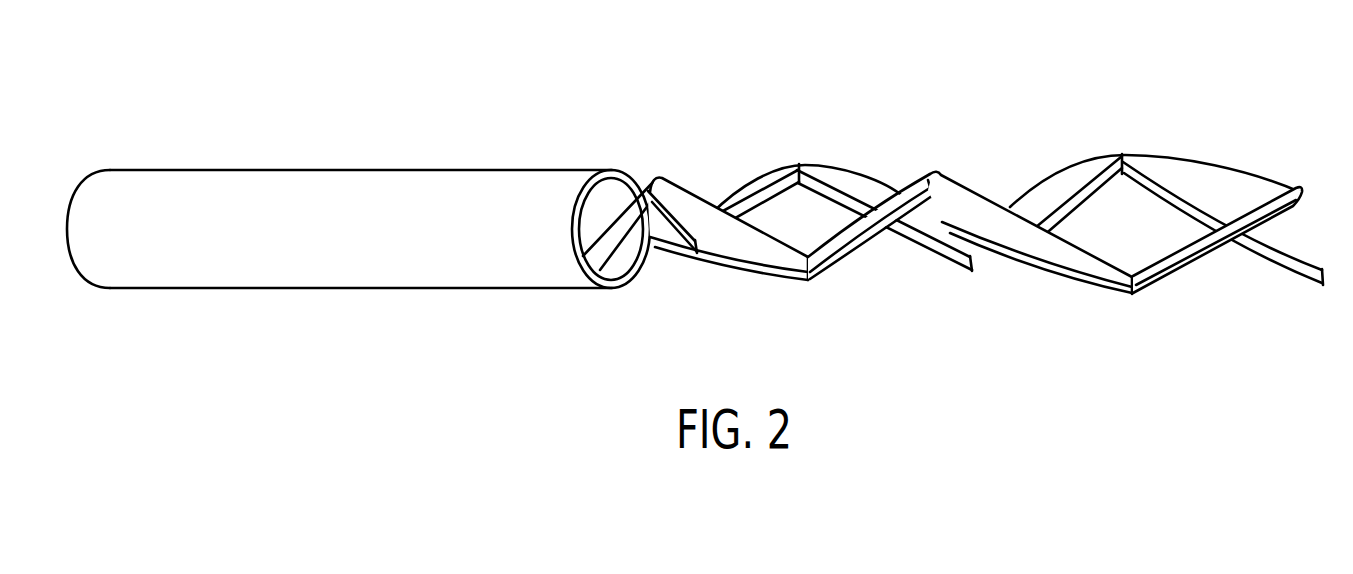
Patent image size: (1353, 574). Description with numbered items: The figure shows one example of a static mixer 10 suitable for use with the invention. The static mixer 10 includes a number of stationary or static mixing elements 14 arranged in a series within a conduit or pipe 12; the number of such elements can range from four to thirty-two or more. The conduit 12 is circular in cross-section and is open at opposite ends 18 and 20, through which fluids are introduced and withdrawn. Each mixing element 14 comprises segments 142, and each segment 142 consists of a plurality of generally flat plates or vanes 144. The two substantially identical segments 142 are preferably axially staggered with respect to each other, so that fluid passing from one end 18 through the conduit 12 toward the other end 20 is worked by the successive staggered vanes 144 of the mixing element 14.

The static mixer 10 is at (682, 194).
The conduit 12 is at (373, 243).
The static mixing element 14 is at (985, 195).
The end 18 is at (93, 180).
The end 20 is at (652, 265).
The segment 142 is at (866, 273).
The vane 144 is at (1090, 272).